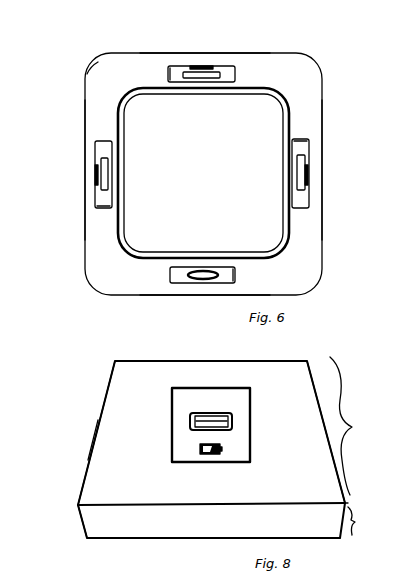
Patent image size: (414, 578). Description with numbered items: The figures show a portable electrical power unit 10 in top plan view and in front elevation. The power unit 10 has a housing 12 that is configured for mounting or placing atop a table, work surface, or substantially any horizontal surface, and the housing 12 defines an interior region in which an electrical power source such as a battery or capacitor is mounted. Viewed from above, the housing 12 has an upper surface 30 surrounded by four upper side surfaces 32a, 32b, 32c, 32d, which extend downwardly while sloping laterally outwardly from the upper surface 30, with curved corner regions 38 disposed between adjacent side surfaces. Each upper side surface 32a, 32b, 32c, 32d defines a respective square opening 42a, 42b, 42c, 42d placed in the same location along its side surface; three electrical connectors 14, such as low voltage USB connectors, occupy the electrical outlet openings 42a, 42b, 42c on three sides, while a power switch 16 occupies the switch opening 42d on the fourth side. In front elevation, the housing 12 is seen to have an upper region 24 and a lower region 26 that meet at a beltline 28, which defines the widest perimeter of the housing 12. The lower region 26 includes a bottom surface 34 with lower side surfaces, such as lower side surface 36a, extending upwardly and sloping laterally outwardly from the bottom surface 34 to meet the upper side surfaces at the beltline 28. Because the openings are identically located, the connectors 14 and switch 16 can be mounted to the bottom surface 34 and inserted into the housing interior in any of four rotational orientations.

In FIG. 6, the portable electrical power unit 10 is at (369, 53).
In FIG. 6, the housing 12 is at (322, 98).
In FIG. 8, the housing 12 is at (104, 386).
In FIG. 6, the electrical connector 14 is at (178, 66).
In FIG. 8, the electrical connector 14 is at (178, 410).
In FIG. 6, the power switch 16 is at (229, 283).
In FIG. 8, the upper region 24 is at (356, 426).
In FIG. 8, the lower region 26 is at (365, 521).
In FIG. 8, the beltline 28 is at (349, 503).
In FIG. 6, the upper surface 30 is at (204, 184).
In FIG. 8, the upper surface 30 is at (167, 360).
In FIG. 6, the upper side surface 32a is at (303, 226).
In FIG. 8, the upper side surface 32a is at (120, 405).
In FIG. 6, the upper side surface 32b is at (253, 70).
In FIG. 8, the upper side surface 32b is at (323, 388).
In FIG. 6, the upper side surface 32c is at (103, 118).
In FIG. 6, the upper side surface 32d is at (156, 276).
In FIG. 8, the upper side surface 32d is at (88, 447).
In FIG. 8, the bottom surface 34 is at (175, 541).
In FIG. 8, the lower side surface 36a is at (102, 522).
In FIG. 6, the curved corner region 38 is at (104, 70).
In FIG. 6, the square opening 42a is at (304, 139).
In FIG. 8, the square opening 42a is at (251, 426).
In FIG. 6, the square opening 42b is at (170, 74).
In FIG. 6, the square opening 42c is at (104, 210).
In FIG. 6, the switch opening 42d is at (238, 273).